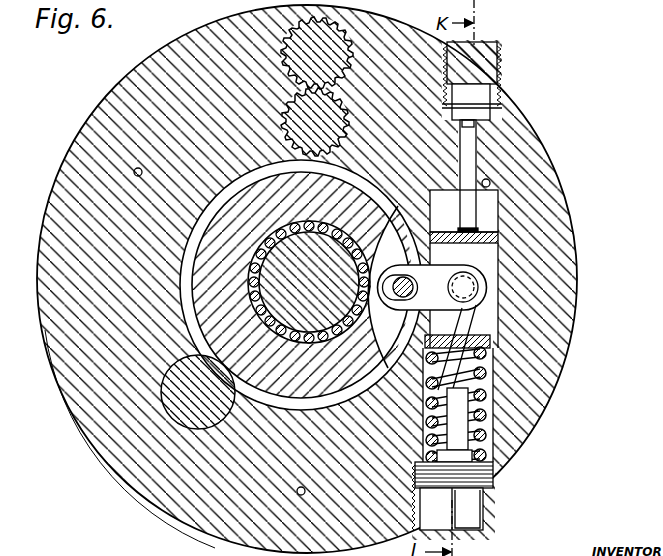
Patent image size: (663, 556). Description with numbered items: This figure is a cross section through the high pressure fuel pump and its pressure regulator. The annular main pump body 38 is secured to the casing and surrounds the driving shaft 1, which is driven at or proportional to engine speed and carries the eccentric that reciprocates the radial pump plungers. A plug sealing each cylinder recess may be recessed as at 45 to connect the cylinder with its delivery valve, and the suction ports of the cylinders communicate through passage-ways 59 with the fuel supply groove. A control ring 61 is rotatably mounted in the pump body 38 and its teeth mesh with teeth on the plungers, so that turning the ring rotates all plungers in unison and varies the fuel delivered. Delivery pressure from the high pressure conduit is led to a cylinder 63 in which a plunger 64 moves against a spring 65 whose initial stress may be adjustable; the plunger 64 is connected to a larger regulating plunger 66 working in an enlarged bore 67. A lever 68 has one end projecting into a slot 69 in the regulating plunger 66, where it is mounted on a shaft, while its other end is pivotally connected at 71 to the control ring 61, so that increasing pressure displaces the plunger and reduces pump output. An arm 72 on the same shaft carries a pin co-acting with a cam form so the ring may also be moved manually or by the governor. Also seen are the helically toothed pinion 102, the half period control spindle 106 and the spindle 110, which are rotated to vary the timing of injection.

The driving shaft 1 is at (327, 273).
The main pump body 38 is at (168, 113).
The recess in plug 45 is at (345, 2).
The passage-ways 59 is at (134, 171).
The control ring 61 is at (213, 258).
The cylinder 63 is at (500, 88).
The plunger 64 is at (468, 155).
The spring 65 is at (490, 437).
The regulating plunger 66 is at (493, 342).
The enlarged bore 67 is at (487, 222).
The lever 68 is at (435, 300).
The slot 69 is at (490, 285).
The pivotal connection 71 is at (402, 297).
The arm 72 is at (473, 320).
The pinion 102 is at (318, 58).
The half period control spindle 106 is at (298, 92).
The spindle 110 is at (185, 403).